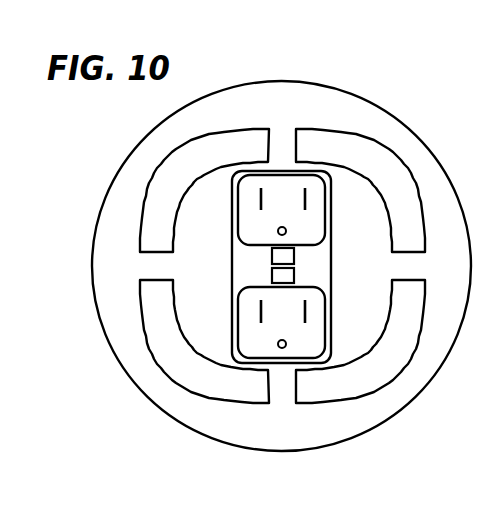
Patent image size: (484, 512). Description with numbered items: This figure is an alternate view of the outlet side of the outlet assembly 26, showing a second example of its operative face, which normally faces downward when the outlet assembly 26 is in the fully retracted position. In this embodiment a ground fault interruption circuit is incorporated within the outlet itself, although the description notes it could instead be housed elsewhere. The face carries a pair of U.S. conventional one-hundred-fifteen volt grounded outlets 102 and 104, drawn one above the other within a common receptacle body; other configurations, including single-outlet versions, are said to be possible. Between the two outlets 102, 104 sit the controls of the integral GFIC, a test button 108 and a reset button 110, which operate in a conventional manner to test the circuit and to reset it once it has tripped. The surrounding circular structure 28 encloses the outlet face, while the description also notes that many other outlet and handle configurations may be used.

The outlet assembly 26 is at (68, 173).
The outer housing 28 is at (372, 102).
The grounded outlet 102 is at (317, 186).
The grounded outlet 104 is at (253, 341).
The test button 108 is at (287, 277).
The reset button 110 is at (272, 255).